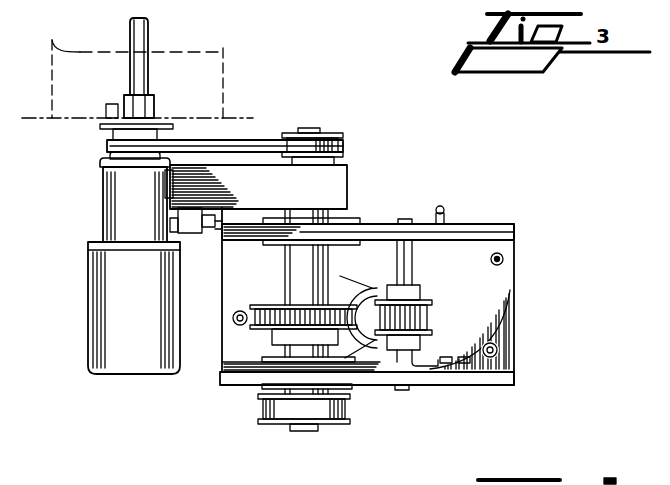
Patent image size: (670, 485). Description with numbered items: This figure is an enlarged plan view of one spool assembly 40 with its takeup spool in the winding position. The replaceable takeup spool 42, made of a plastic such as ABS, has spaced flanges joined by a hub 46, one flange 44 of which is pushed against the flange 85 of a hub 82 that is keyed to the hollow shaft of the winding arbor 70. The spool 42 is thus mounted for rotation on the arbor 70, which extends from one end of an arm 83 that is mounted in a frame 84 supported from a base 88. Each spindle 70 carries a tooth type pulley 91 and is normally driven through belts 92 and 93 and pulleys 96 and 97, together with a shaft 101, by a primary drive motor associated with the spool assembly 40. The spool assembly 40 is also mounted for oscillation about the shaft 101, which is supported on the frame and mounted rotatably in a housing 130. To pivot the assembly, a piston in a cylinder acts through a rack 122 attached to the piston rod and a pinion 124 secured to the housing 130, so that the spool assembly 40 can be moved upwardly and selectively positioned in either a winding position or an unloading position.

The spool assembly 40 is at (327, 45).
The takeup spool 42 is at (224, 50).
The flange 44 is at (262, 142).
The hub 46 is at (224, 67).
The winding arbor 70 is at (152, 34).
The hub 82 is at (92, 214).
The arm 83 is at (350, 174).
The frame 84 is at (482, 230).
The flange 85 is at (110, 127).
The base 88 is at (514, 257).
The tooth type pulley 91 is at (110, 154).
The belt 92 is at (312, 133).
The belt 93 is at (263, 404).
The pulley 96 is at (336, 144).
The pulley 97 is at (352, 420).
The shaft 101 is at (336, 123).
The rack 122 is at (364, 300).
The pinion 124 is at (252, 313).
The housing 130 is at (336, 268).